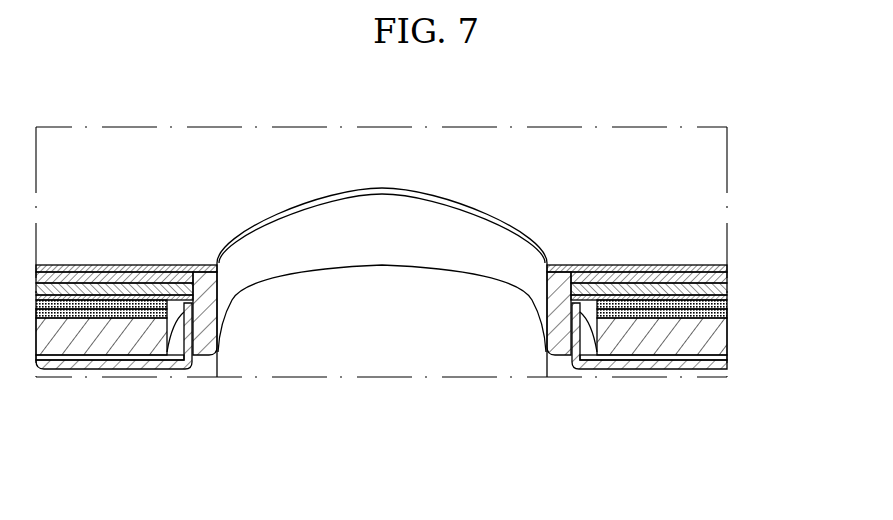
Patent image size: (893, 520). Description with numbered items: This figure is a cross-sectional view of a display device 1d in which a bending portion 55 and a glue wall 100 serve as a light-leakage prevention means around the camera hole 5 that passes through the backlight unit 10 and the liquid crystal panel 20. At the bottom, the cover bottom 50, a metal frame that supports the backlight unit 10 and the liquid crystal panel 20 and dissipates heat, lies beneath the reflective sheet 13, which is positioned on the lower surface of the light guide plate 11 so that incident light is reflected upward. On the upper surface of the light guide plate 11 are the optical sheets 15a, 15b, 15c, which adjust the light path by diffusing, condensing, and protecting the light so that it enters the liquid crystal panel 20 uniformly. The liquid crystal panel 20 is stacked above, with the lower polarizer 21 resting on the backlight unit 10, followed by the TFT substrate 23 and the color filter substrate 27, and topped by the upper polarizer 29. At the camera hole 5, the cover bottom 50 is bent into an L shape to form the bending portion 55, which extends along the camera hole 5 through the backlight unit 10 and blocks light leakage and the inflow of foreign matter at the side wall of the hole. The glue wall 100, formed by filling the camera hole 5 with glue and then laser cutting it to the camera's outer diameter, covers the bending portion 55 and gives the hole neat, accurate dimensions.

The display device 1d is at (63, 87).
The camera hole 5 is at (217, 377).
The backlight unit 10 is at (816, 330).
The light guide plate 11 is at (727, 357).
The reflective sheet 13 is at (727, 365).
The optical sheet 15a is at (727, 335).
The optical sheet 15b is at (727, 312).
The optical sheet 15c is at (727, 304).
The liquid crystal panel 20 is at (806, 240).
The lower polarizer 21 is at (727, 297).
The TFT substrate 23 is at (727, 289).
The color filter substrate 27 is at (727, 277).
The upper polarizer 29 is at (727, 268).
The cover bottom 50 is at (700, 368).
The bending portion 55 is at (547, 370).
The glue wall 100 is at (380, 247).